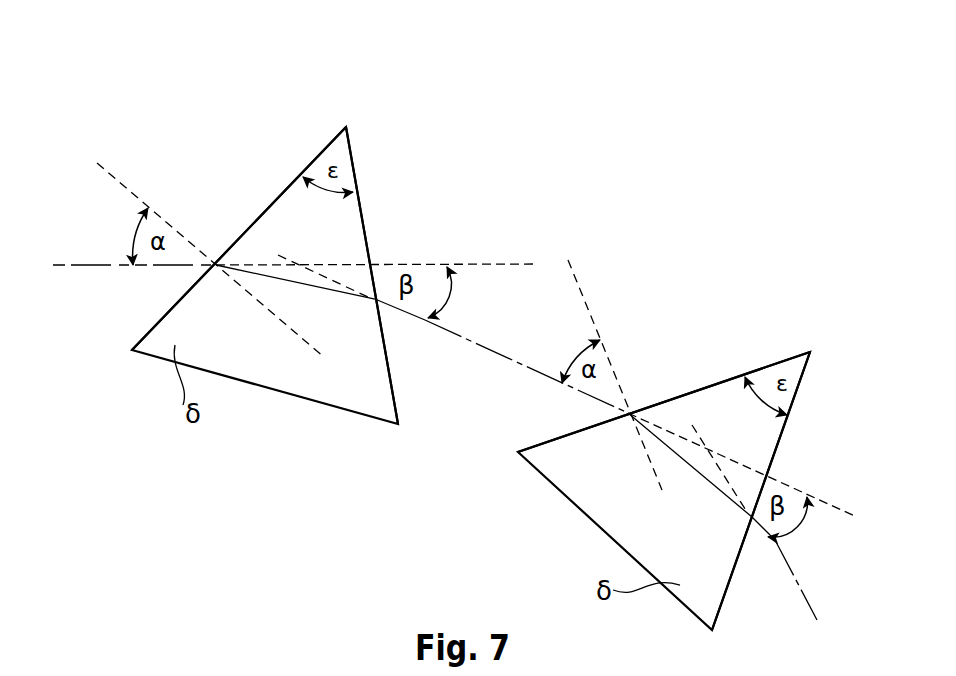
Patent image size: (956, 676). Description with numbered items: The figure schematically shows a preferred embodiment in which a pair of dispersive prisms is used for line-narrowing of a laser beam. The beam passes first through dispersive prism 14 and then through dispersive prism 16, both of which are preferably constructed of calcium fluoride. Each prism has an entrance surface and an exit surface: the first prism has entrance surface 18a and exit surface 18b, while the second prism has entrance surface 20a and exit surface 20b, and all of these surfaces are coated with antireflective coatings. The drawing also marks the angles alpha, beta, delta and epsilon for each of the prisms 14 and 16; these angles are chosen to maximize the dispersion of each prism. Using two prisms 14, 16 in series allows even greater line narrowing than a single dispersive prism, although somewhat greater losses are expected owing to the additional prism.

The dispersive prism 14 is at (363, 80).
The dispersive prism 16 is at (812, 310).
The entrance surface 18a is at (275, 195).
The exit surface 18b is at (366, 220).
The entrance surface 20a is at (715, 377).
The exit surface 20b is at (789, 443).